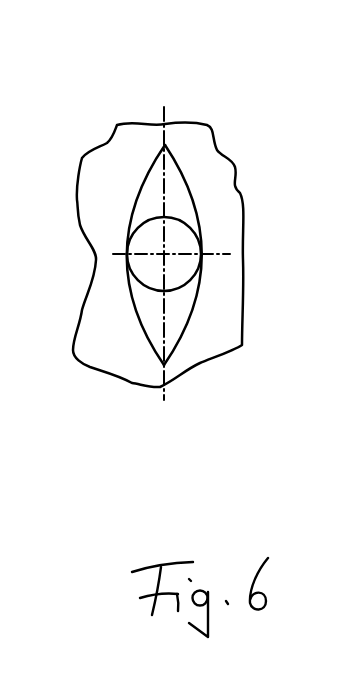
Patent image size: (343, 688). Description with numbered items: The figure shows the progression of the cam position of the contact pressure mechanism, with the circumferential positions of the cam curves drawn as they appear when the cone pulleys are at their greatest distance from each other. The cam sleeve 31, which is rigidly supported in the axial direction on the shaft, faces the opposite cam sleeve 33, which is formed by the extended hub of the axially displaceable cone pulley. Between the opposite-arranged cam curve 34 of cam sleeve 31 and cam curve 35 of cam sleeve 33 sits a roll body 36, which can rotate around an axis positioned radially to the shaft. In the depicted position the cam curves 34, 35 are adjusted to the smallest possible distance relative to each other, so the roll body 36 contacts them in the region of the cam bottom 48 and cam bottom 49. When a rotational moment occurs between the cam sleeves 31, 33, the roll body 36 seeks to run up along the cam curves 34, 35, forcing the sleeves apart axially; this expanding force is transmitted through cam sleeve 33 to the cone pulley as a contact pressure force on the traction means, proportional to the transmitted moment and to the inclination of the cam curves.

The cam sleeve 31 is at (98, 338).
The cam sleeve 33 is at (215, 167).
The cam curve 34 is at (142, 172).
The cam curve 35 is at (190, 317).
The roll body 36 is at (175, 238).
The cam bottom 48 is at (122, 256).
The cam bottom 49 is at (200, 256).